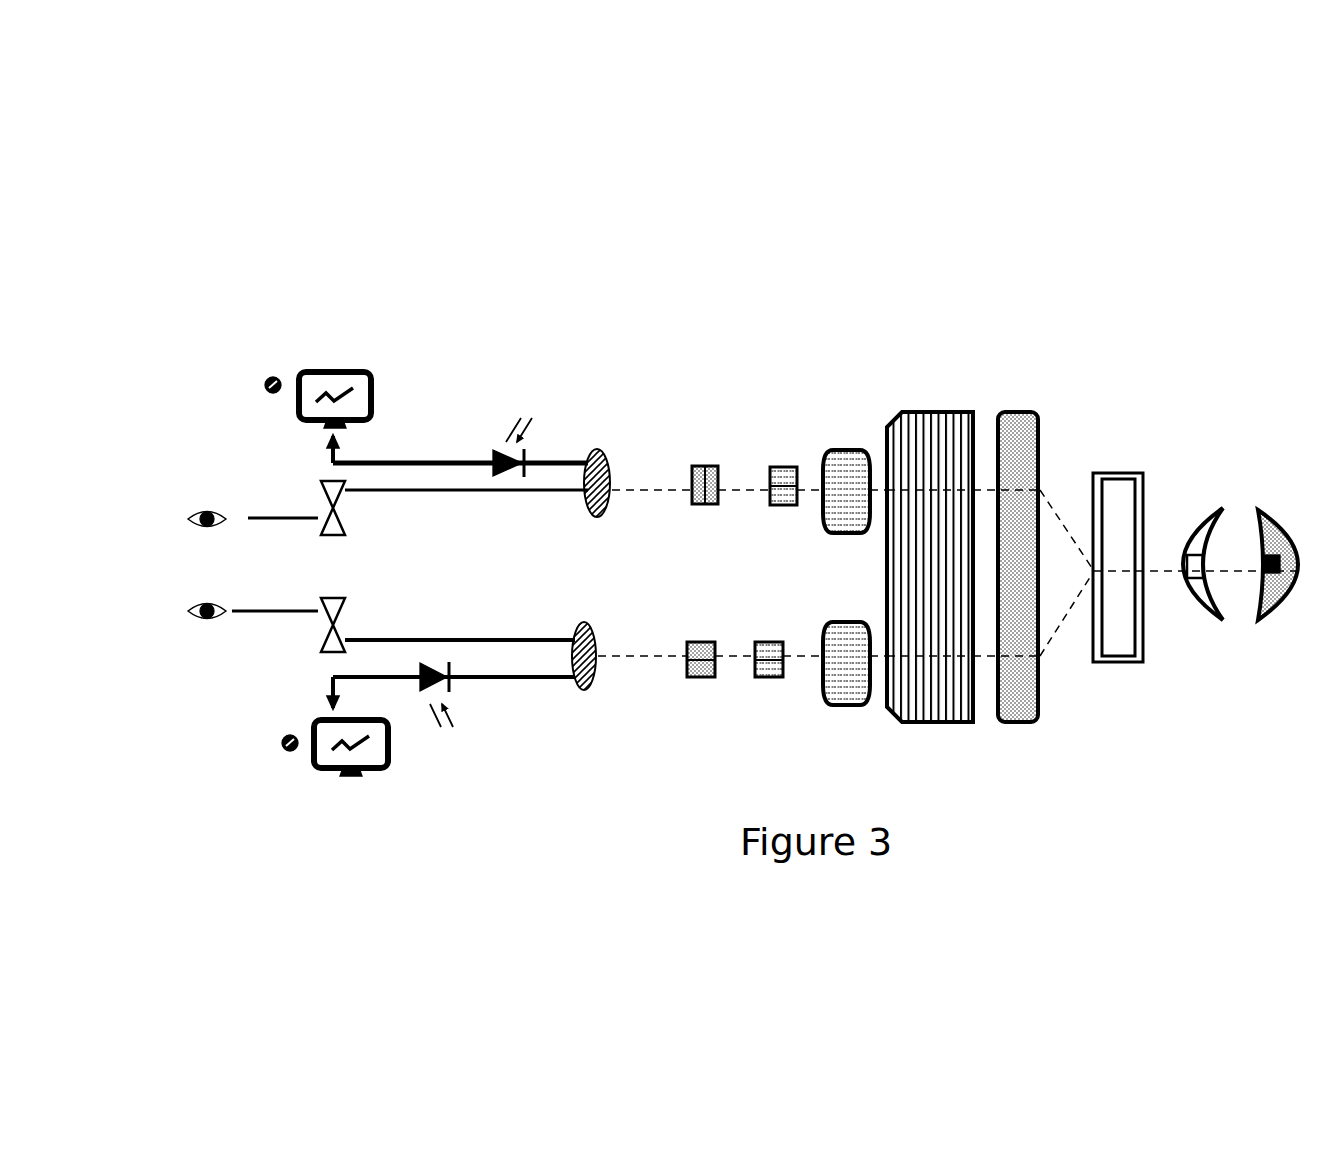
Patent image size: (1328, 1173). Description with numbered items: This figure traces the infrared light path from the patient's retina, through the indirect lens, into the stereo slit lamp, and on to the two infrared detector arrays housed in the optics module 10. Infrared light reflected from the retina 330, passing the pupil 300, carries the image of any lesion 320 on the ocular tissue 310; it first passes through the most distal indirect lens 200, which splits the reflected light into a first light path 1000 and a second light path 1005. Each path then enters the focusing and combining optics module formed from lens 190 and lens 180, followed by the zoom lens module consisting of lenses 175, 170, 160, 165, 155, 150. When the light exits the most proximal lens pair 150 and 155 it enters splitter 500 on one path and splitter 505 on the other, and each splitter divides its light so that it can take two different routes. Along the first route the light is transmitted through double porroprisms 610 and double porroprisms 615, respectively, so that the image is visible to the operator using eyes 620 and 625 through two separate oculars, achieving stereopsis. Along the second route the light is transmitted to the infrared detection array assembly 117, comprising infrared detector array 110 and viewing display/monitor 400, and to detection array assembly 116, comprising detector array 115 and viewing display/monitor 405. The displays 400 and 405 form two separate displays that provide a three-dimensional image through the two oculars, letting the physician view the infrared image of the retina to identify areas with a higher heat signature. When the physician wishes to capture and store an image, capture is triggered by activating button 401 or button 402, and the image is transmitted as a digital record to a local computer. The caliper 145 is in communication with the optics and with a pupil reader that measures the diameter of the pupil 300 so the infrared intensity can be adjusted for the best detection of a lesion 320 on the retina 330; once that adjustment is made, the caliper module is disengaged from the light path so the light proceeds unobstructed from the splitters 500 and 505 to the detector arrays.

The optics module 10 is at (736, 550).
The infrared detector array 110 is at (481, 429).
The infrared detector array 115 is at (474, 735).
The detection array assembly 116 is at (315, 780).
The infrared detection array assembly 117 is at (272, 344).
The caliper 145 is at (619, 437).
The zoom module lens 150 is at (706, 442).
The zoom module lens 155 is at (698, 684).
The zoom module lens 160 is at (777, 450).
The zoom module lens 165 is at (760, 684).
The zoom module lens 170 is at (852, 438).
The zoom module lens 175 is at (839, 712).
The focusing and combining lens 180 is at (913, 735).
The focusing and combining lens 190 is at (1004, 732).
The indirect lens 200 is at (1103, 672).
The pupil 300 is at (1165, 540).
The ocular tissue 310 is at (1198, 640).
The lesion 320 is at (1255, 545).
The retina 330 is at (1259, 636).
The viewing display/monitor 400 is at (330, 358).
The image capture button 401 is at (262, 357).
The image capture button 402 is at (270, 754).
The viewing display/monitor 405 is at (399, 760).
The splitter 500 is at (580, 436).
The splitter 505 is at (597, 700).
The double porroprisms 610 is at (314, 483).
The double porroprisms 615 is at (356, 610).
The operator's eye 620 is at (203, 458).
The operator's eye 625 is at (213, 652).
The light path 1000 is at (1068, 506).
The light path 1005 is at (1057, 662).